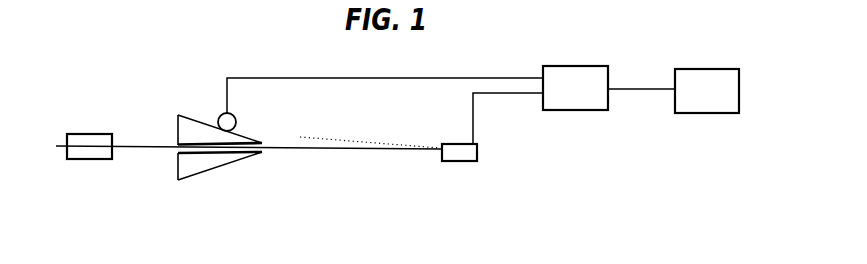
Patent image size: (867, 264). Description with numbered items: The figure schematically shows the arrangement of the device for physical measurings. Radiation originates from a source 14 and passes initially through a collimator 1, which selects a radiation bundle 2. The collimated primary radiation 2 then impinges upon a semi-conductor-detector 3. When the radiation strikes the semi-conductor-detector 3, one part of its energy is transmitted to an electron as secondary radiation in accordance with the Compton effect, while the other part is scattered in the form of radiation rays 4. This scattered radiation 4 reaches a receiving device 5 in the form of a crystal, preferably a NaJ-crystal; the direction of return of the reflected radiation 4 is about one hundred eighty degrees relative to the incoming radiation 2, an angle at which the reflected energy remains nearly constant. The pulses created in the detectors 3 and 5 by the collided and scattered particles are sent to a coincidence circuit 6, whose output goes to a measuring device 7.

The source 14 is at (83, 137).
The collimator 1 is at (215, 165).
The radiation bundle 2 is at (322, 152).
The semi-conductor-detector 3 is at (464, 156).
The scattered radiation rays 4 is at (352, 137).
The receiving device 5 is at (219, 115).
The coincidence circuit 6 is at (561, 103).
The measuring device 7 is at (739, 107).